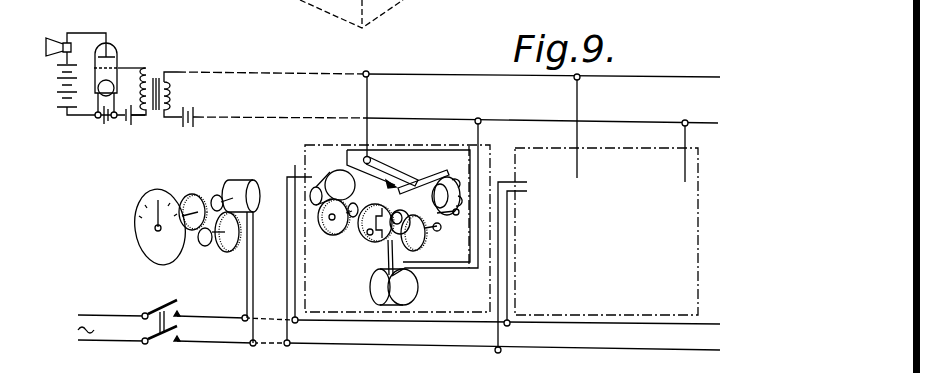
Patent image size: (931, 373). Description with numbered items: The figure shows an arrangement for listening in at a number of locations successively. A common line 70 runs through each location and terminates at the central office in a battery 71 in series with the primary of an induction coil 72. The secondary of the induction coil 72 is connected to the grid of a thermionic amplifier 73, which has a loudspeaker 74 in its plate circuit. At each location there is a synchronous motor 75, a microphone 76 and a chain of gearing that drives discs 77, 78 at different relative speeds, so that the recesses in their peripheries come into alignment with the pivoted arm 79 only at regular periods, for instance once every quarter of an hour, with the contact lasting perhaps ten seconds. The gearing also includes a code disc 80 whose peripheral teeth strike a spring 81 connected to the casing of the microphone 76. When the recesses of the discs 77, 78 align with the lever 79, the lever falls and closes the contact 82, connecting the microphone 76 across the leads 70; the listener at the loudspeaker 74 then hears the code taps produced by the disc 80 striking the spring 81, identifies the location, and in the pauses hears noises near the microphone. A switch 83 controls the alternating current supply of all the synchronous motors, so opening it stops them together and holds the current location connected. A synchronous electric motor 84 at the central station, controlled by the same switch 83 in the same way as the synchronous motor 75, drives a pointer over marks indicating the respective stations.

The common line 70 is at (678, 97).
The battery 71 is at (193, 110).
The induction coil 72 is at (179, 80).
The thermionic amplifier 73 is at (117, 53).
The loudspeaker 74 is at (50, 40).
The synchronous motor 75 is at (333, 177).
The microphone 76 is at (376, 290).
The disc 77 is at (437, 230).
The disc 78 is at (460, 213).
The pivoted arm 79 is at (440, 170).
The code disc 80 is at (364, 241).
The spring 81 is at (388, 257).
The contact 82 is at (405, 178).
The switch 83 is at (178, 302).
The synchronous electric motor 84 is at (246, 180).